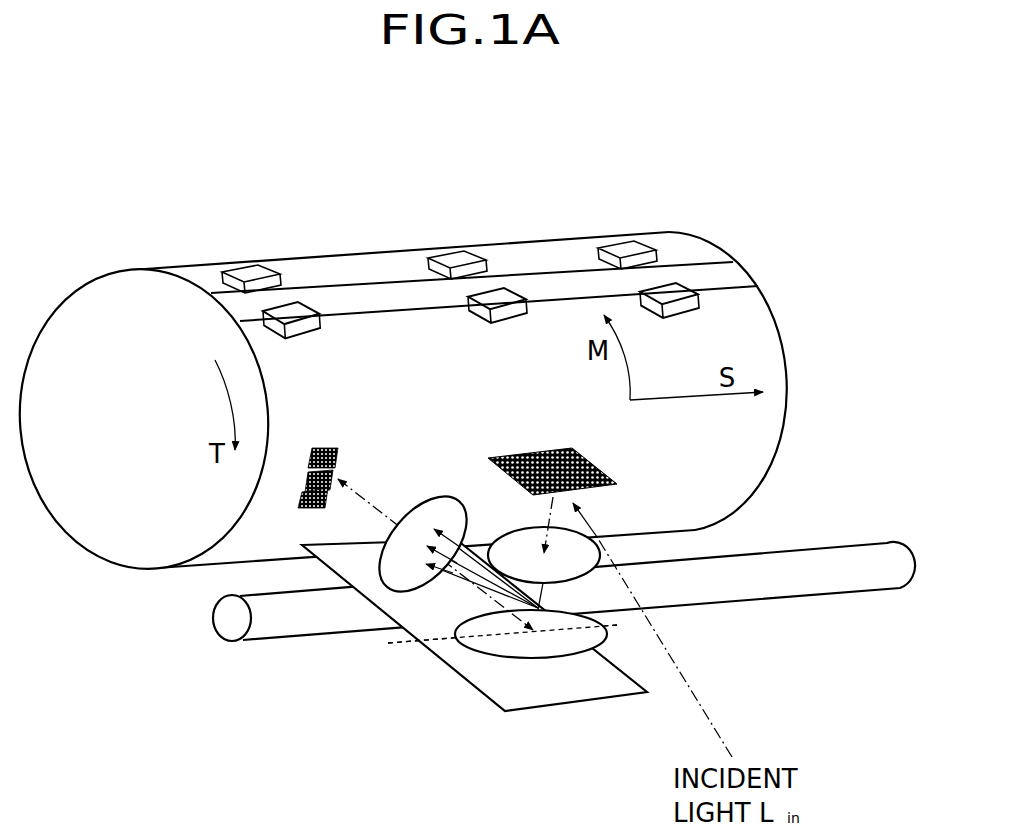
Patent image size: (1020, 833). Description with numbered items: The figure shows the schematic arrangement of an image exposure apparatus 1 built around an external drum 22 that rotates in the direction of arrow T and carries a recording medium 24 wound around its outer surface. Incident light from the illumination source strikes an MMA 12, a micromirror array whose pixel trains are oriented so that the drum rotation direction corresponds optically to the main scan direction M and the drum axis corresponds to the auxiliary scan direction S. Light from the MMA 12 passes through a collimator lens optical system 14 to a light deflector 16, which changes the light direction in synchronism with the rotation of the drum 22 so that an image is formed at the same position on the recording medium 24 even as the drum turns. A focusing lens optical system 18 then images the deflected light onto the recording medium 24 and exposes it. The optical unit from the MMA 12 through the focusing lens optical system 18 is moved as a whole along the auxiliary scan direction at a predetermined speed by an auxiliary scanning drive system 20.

The image exposure apparatus 1 is at (578, 190).
The MMA 12 is at (627, 488).
The collimator lens optical system 14 is at (579, 573).
The light deflector 16 is at (516, 647).
The focusing lens optical system 18 is at (407, 582).
The auxiliary scanning drive system 20 is at (322, 652).
The external drum 22 is at (97, 325).
The recording medium 24 is at (363, 353).